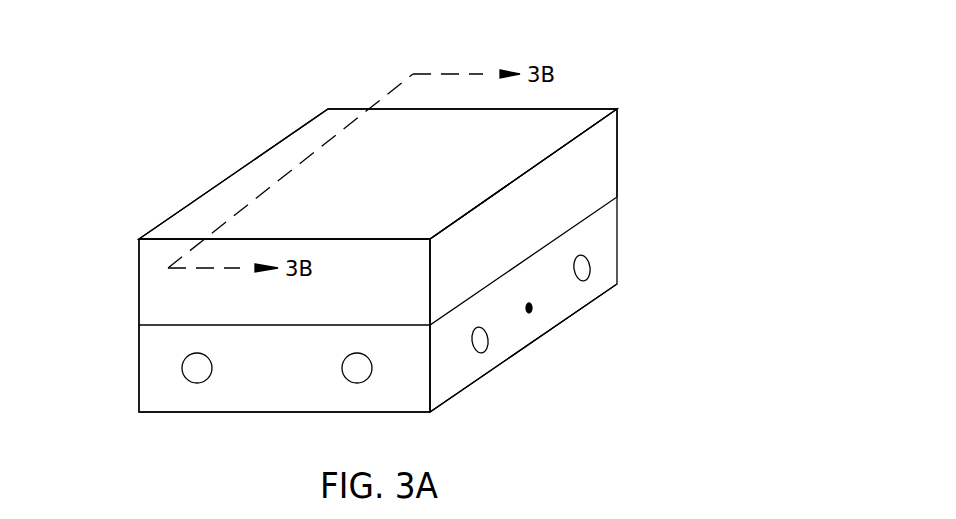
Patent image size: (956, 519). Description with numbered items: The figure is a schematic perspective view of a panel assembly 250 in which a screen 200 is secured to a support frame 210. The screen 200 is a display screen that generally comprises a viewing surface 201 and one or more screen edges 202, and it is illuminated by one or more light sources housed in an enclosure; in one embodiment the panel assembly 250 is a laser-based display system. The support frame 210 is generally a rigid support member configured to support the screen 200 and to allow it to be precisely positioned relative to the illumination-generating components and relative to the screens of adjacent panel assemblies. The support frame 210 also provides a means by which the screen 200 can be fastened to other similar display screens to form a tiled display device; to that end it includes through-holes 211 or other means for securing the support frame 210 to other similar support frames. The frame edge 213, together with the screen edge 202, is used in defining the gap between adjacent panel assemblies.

The screen 200 is at (585, 183).
The viewing surface 201 is at (563, 122).
The screen edge 202 is at (607, 138).
The support frame 210 is at (532, 309).
The through-holes 211 is at (483, 352).
The frame edge 213 is at (612, 230).
The panel assembly 250 is at (176, 90).